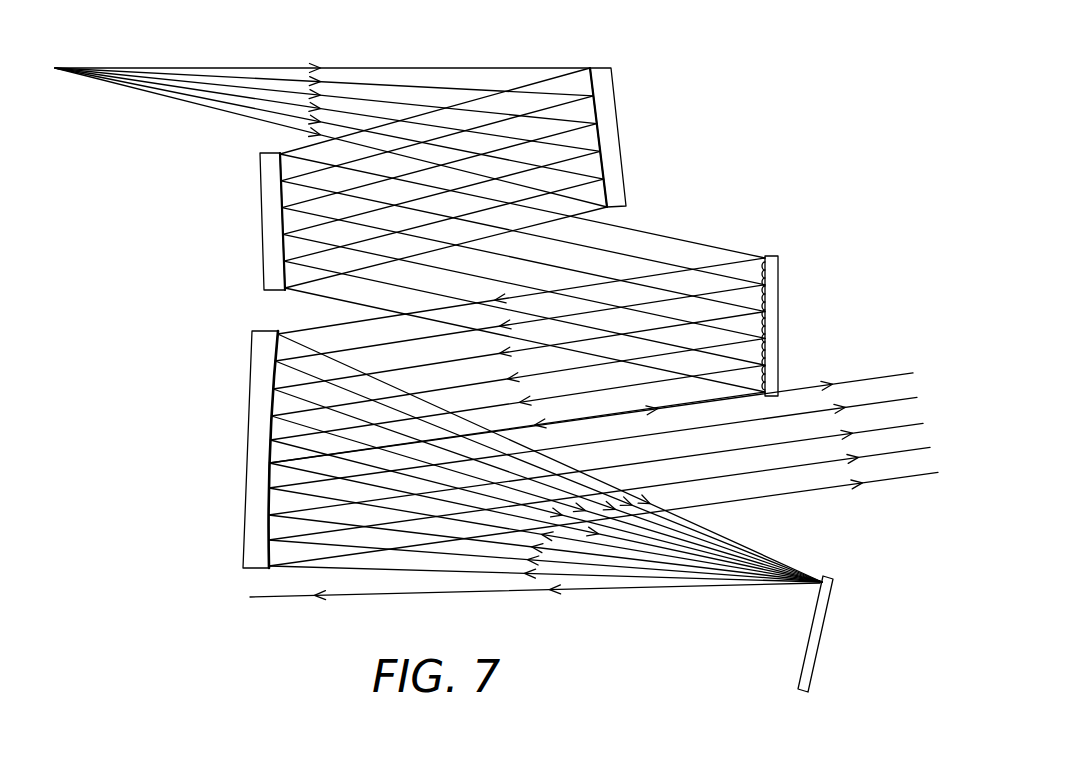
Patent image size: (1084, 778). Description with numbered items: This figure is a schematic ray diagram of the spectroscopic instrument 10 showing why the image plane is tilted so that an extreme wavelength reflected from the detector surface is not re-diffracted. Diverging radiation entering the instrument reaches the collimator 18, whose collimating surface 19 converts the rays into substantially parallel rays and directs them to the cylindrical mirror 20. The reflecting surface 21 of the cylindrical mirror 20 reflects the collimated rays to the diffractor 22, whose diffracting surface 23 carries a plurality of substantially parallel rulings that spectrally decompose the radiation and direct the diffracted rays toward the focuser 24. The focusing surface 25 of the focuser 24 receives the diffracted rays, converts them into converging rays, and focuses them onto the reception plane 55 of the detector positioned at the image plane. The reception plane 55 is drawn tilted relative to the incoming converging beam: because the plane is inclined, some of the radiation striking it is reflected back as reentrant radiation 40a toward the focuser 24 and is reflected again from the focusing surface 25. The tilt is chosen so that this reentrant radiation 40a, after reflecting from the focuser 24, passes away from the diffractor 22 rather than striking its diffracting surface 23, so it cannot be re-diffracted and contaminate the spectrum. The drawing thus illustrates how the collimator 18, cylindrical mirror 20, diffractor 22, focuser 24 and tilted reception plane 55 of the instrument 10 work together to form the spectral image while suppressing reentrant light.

The spectroscopic instrument 10 is at (733, 91).
The collimator 18 is at (617, 97).
The collimating surface 19 is at (598, 138).
The cylindrical mirror 20 is at (261, 231).
The reflecting surface 21 is at (285, 247).
The diffractor 22 is at (779, 270).
The diffracting surface 23 is at (757, 326).
The focuser 24 is at (250, 447).
The focusing surface 25 is at (272, 470).
The reentrant radiation 40a is at (650, 543).
The reception plane 55 is at (812, 622).